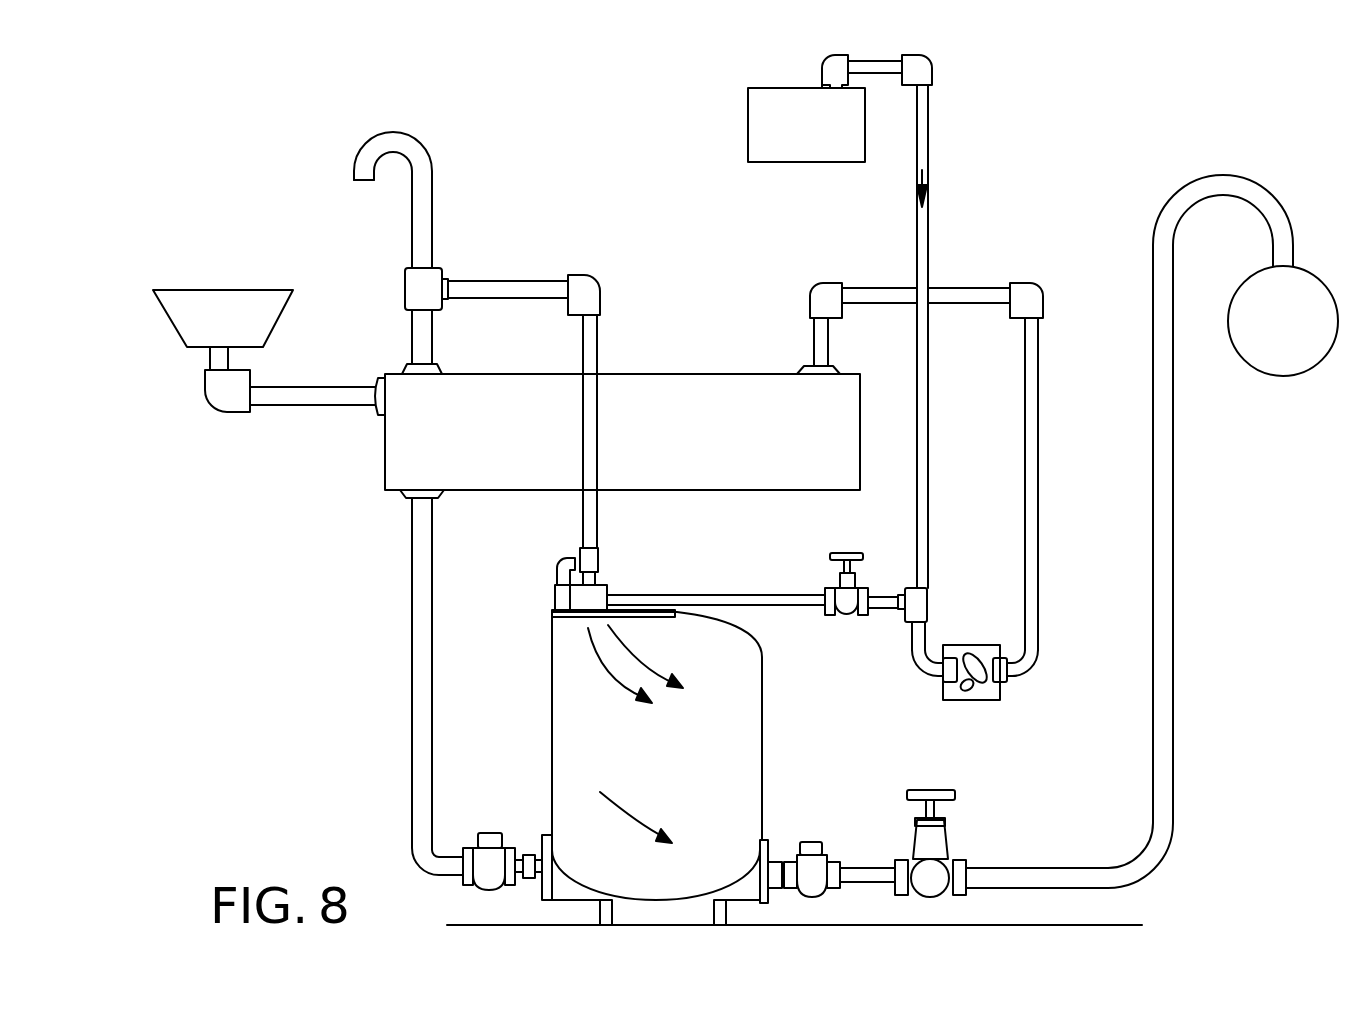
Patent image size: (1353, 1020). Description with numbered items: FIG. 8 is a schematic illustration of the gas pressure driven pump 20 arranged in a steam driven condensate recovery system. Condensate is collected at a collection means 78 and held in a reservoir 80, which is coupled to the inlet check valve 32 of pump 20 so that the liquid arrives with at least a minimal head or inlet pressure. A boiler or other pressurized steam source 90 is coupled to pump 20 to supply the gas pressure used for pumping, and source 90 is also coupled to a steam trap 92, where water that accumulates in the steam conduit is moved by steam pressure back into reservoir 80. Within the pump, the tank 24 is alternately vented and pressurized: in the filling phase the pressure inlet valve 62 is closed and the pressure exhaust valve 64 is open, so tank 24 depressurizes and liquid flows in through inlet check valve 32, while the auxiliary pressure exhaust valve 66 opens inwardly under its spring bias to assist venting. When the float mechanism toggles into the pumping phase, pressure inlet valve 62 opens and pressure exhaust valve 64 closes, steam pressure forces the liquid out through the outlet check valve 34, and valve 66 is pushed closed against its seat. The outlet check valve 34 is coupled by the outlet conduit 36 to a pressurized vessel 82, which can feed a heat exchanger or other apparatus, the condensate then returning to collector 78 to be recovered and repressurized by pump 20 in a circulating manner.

The gas pressure driven pump 20 is at (778, 708).
The tank 24 is at (565, 785).
The inlet check valve 32 is at (470, 890).
The outlet check valve 34 is at (822, 865).
The outlet conduit 36 is at (1043, 876).
The pressure inlet valve 62 is at (734, 465).
The pressure exhaust valve 64 is at (600, 592).
The auxiliary pressure exhaust valve 66 is at (556, 597).
The collection means 78 is at (190, 330).
The reservoir 80 is at (707, 402).
The pressurized vessel 82 is at (1270, 355).
The steam source 90 is at (803, 162).
The steam trap 92 is at (958, 690).